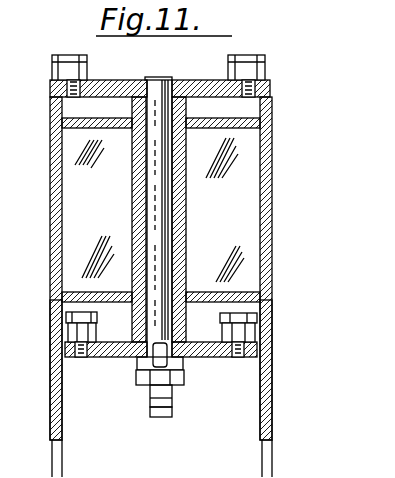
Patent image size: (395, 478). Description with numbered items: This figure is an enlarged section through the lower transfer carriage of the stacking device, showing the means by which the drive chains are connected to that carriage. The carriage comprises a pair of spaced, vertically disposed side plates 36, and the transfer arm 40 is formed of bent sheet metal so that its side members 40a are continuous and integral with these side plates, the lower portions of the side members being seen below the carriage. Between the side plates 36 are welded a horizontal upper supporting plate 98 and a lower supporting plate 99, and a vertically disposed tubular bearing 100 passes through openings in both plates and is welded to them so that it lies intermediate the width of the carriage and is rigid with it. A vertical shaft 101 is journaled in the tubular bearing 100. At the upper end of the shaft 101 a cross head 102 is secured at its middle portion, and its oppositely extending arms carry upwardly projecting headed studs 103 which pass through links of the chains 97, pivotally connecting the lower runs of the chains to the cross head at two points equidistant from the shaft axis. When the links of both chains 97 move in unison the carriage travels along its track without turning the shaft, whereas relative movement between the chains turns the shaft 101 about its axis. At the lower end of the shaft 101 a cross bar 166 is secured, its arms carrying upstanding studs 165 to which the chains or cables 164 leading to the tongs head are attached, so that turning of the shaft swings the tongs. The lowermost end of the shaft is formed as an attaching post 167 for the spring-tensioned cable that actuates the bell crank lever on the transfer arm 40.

The side plates 36 is at (51, 213).
The transfer arm 40 is at (68, 452).
The side members 40a is at (62, 400).
The chains 97 is at (52, 75).
The upper supporting plate 98 is at (108, 130).
The lower supporting plate 99 is at (78, 296).
The tubular bearing 100 is at (131, 184).
The vertical shaft 101 is at (162, 214).
The cross head 102 is at (100, 86).
The headed studs 103 is at (52, 66).
The chains or cables 164 is at (94, 336).
The upstanding studs 165 is at (64, 331).
The cross bar 166 is at (213, 358).
The attaching post 167 is at (163, 419).